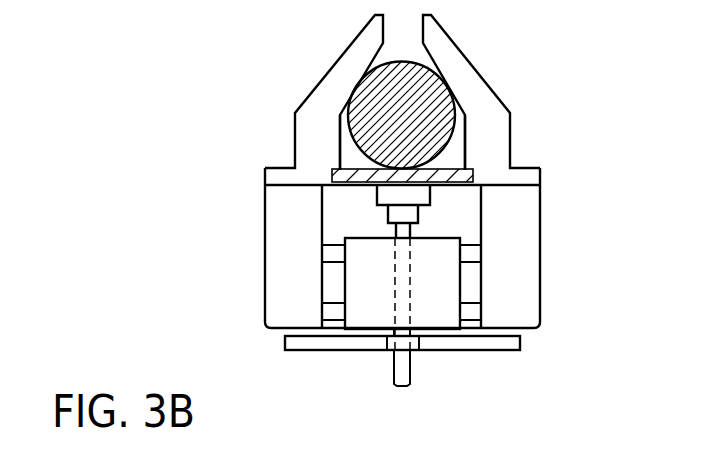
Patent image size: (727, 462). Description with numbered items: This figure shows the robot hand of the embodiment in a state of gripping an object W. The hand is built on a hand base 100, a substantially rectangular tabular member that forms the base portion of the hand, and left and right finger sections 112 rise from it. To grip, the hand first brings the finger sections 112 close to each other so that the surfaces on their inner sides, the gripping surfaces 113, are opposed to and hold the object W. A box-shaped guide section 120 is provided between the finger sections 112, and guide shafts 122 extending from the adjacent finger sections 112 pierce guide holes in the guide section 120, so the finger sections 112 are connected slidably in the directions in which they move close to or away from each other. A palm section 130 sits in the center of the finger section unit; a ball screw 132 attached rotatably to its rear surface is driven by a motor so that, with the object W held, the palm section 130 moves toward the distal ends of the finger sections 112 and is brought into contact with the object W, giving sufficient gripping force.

The hand base 100 is at (488, 351).
The finger section 112 is at (302, 94).
The gripping surface 113 is at (338, 133).
The guide section 120 is at (345, 284).
The guide shaft 122 is at (470, 244).
The palm section 130 is at (358, 187).
The ball screw 132 is at (412, 363).
The object W is at (378, 65).